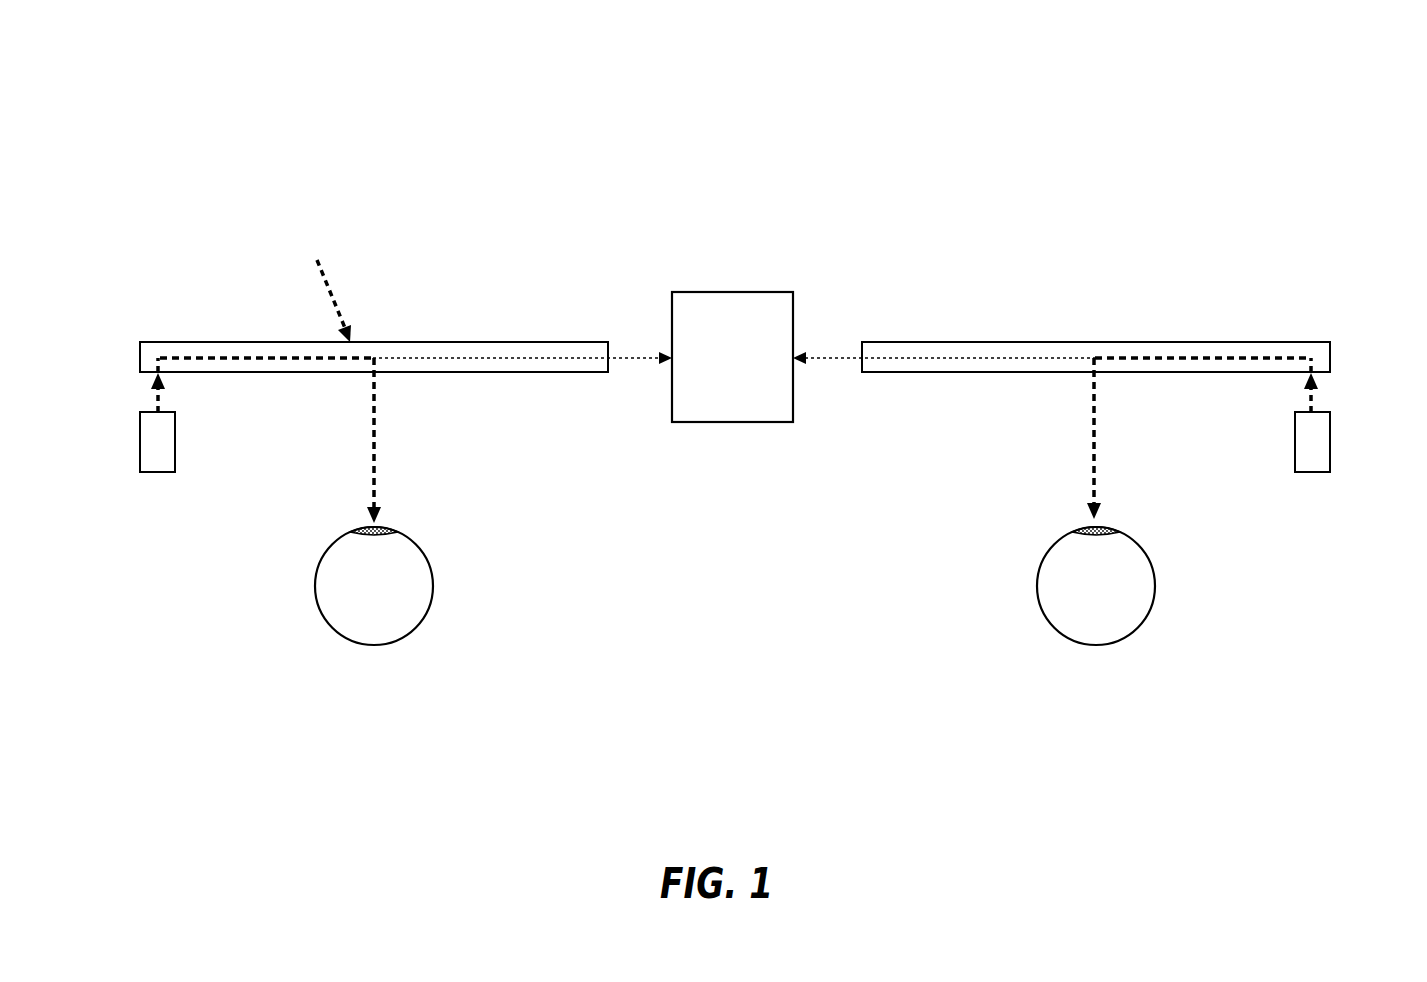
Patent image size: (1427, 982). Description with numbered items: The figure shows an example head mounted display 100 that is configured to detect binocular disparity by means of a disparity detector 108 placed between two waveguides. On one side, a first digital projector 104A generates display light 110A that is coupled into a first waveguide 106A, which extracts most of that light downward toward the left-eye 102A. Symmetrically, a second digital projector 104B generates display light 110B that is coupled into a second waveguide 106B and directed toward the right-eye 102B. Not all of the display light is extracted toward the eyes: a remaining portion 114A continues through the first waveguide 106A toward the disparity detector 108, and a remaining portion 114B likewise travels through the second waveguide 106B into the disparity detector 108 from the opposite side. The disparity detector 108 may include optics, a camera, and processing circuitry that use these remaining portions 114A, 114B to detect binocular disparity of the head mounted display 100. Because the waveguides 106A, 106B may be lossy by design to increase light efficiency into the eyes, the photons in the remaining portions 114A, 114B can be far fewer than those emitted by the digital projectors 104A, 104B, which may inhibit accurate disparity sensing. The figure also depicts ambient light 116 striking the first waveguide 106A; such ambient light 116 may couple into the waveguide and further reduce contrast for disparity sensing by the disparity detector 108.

The head mounted display 100 is at (1118, 97).
The left-eye 102A is at (433, 590).
The right-eye 102B is at (1038, 593).
The first digital projector 104A is at (143, 447).
The second digital projector 104B is at (1328, 462).
The first waveguide 106A is at (140, 355).
The second waveguide 106B is at (1298, 349).
The disparity detector 108 is at (672, 300).
The display light 110A is at (153, 402).
The display light 110B is at (1093, 447).
The remaining portion 114A is at (640, 357).
The remaining portion 114B is at (835, 358).
The ambient light 116 is at (318, 262).